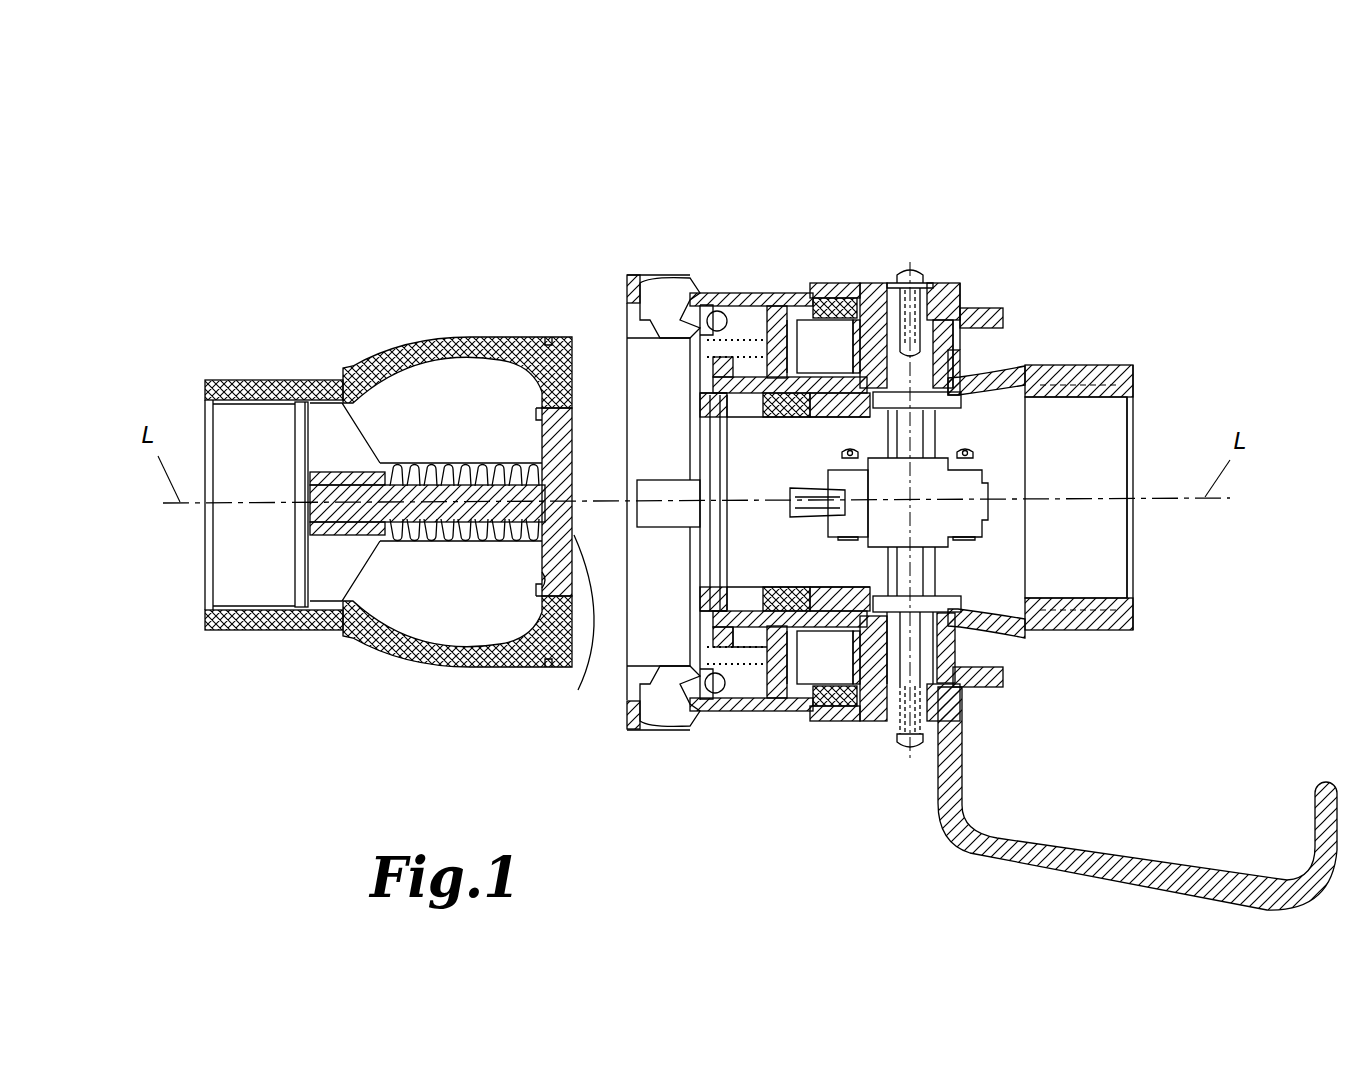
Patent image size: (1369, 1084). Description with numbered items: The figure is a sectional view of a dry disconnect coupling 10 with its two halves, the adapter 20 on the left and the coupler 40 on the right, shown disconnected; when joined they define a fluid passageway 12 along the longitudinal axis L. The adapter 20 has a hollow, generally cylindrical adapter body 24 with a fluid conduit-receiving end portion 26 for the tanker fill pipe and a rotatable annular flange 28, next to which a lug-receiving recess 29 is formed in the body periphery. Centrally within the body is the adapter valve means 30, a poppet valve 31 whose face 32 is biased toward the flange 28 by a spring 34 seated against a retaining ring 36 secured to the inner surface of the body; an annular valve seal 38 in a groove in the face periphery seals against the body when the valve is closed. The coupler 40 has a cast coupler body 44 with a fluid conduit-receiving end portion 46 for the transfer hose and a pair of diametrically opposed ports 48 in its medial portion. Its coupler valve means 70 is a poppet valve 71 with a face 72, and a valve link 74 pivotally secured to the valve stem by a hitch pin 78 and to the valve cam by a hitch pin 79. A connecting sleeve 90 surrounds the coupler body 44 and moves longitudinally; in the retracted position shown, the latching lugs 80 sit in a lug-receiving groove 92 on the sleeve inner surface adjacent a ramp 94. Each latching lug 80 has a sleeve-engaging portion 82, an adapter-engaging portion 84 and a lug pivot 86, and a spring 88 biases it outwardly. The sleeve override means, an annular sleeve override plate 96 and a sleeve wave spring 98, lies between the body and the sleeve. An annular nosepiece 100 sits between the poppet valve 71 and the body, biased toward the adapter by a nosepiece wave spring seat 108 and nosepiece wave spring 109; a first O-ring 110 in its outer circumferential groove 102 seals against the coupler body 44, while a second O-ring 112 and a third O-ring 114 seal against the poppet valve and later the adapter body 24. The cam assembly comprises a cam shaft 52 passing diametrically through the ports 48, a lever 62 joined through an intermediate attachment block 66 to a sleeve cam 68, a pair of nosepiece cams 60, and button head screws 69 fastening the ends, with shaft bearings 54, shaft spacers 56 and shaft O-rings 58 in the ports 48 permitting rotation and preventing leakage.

The dry disconnect coupling 10 is at (553, 175).
The fluid passageway 12 is at (428, 595).
The adapter 20 is at (369, 330).
The adapter body 24 is at (352, 643).
The fluid conduit-receiving end portion 26 is at (237, 627).
The rotatable annular flange 28 is at (565, 335).
The lug-receiving recess 29 is at (537, 662).
The adapter valve means 30 is at (518, 424).
The poppet valve 31 is at (545, 512).
The face 32 is at (578, 690).
The spring 34 is at (425, 470).
The retaining ring 36 is at (298, 437).
The annular valve seal 38 is at (548, 572).
The coupler 40 is at (858, 172).
The coupler body 44 is at (990, 378).
The fluid conduit-receiving end portion 46 is at (1135, 378).
The ports 48 is at (957, 641).
The cam shaft 52 is at (925, 658).
The shaft bearings 54 is at (950, 365).
The shaft spacers 56 is at (945, 300).
The shaft O-rings 58 is at (965, 318).
The nosepiece cams 60 is at (960, 404).
The lever 62 is at (1085, 880).
The intermediate attachment block 66 is at (1137, 824).
The sleeve cams 68 is at (1000, 315).
The button head screws 69 is at (925, 276).
The coupler valve means 70 is at (1109, 485).
The poppet valve 71 is at (880, 565).
The face 72 is at (690, 458).
The valve link 74 is at (975, 512).
The hitch pin 78 is at (880, 440).
The hitch pin 79 is at (968, 458).
The latching lugs 80 is at (625, 300).
The sleeve-engaging portion 82 is at (648, 715).
The adapter-engaging portion 84 is at (685, 650).
The lug pivot 86 is at (712, 693).
The spring 88 is at (740, 645).
The connecting sleeve 90 is at (790, 293).
The lug-receiving groove 92 is at (665, 290).
The ramp 94 is at (705, 320).
The sleeve override plate 96 is at (870, 283).
The sleeve wave spring 98 is at (835, 296).
The nosepiece 100 is at (735, 400).
The first circumferential groove 102 is at (765, 400).
The nosepiece wave spring seat 108 is at (850, 721).
The nosepiece wave spring 109 is at (822, 706).
The first O-ring 110 is at (772, 699).
The second O-ring 112 is at (718, 418).
The third O-ring 114 is at (705, 610).